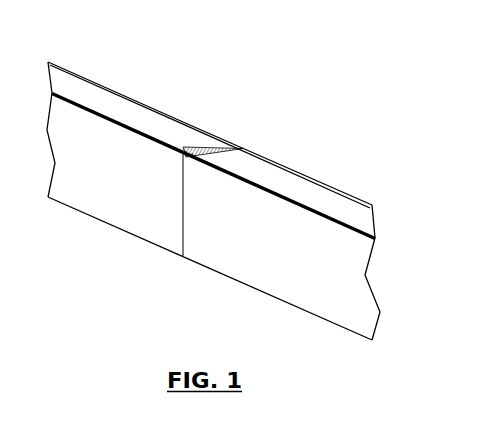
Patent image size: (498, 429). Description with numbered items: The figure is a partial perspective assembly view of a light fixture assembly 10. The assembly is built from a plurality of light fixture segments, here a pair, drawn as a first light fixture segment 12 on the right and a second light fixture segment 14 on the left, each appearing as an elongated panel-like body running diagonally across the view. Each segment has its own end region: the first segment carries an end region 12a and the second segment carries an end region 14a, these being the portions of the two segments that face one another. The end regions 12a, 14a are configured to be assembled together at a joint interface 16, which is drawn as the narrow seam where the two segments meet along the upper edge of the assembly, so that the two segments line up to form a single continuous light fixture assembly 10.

The light fixture assembly 10 is at (213, 196).
The light fixture segment 12 is at (278, 238).
The end region of light fixture segment 12 12a is at (203, 238).
The light fixture segment 14 is at (115, 189).
The end region of light fixture segment 14 14a is at (157, 227).
The joint interface 16 is at (237, 128).